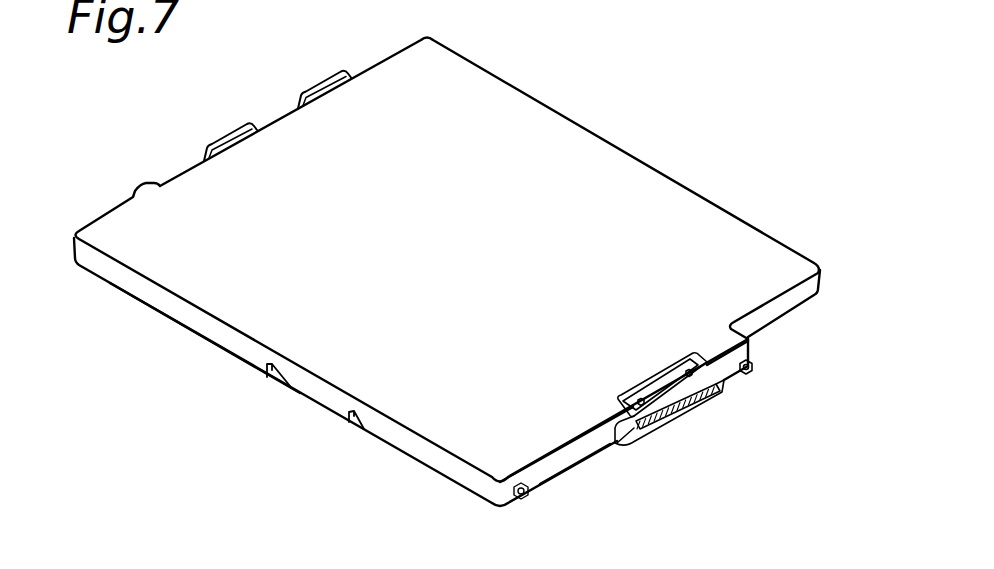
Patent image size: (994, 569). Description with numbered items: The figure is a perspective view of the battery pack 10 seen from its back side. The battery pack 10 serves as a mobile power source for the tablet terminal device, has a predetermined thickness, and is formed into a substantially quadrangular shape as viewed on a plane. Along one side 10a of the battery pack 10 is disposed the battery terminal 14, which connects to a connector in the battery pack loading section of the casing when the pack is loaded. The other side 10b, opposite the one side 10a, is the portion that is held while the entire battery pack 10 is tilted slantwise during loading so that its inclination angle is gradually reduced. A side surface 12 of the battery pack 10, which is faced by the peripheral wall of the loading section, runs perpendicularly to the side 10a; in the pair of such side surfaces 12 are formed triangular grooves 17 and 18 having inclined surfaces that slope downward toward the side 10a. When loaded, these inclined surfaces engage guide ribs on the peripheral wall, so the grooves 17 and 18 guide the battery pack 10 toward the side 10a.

The battery pack 10 is at (578, 184).
The one side 10a is at (580, 457).
The other side 10b is at (281, 112).
The side surface 12 is at (200, 328).
The battery terminal 14 is at (685, 407).
The triangular groove 17 is at (353, 422).
The triangular groove 18 is at (273, 374).